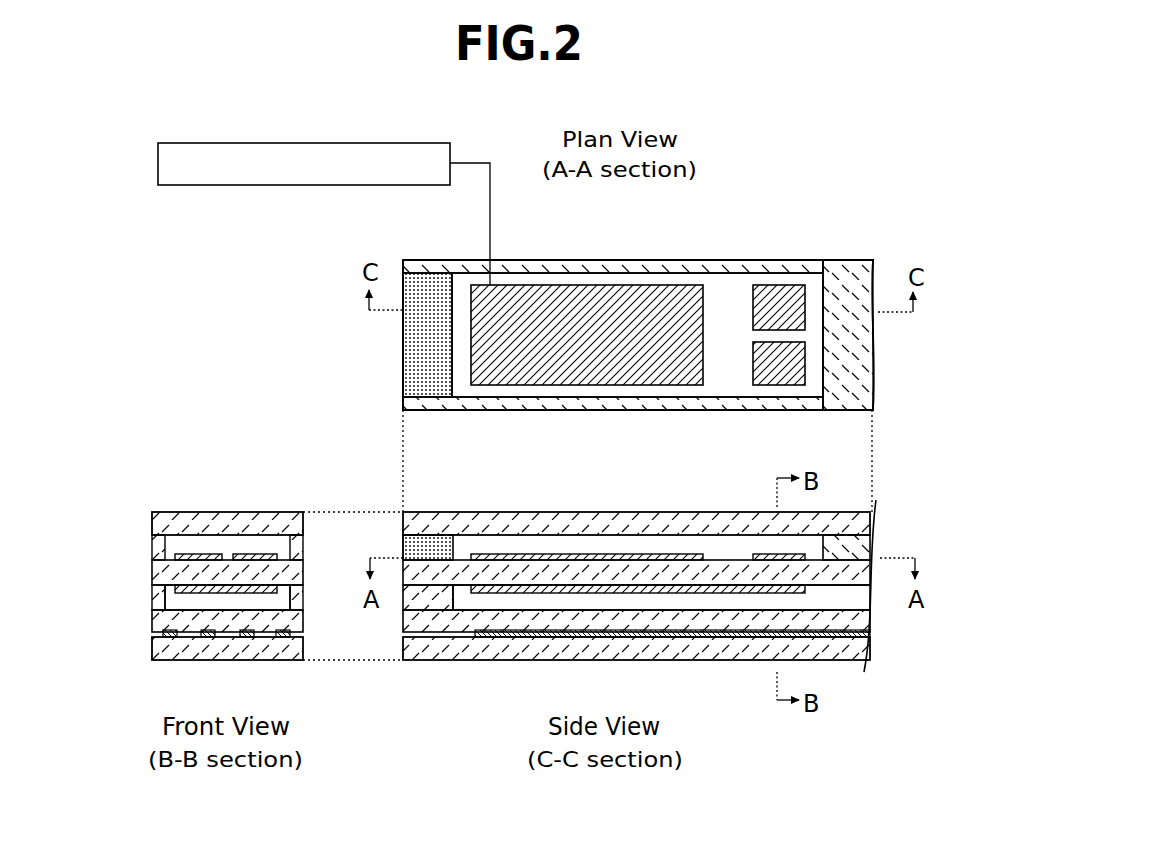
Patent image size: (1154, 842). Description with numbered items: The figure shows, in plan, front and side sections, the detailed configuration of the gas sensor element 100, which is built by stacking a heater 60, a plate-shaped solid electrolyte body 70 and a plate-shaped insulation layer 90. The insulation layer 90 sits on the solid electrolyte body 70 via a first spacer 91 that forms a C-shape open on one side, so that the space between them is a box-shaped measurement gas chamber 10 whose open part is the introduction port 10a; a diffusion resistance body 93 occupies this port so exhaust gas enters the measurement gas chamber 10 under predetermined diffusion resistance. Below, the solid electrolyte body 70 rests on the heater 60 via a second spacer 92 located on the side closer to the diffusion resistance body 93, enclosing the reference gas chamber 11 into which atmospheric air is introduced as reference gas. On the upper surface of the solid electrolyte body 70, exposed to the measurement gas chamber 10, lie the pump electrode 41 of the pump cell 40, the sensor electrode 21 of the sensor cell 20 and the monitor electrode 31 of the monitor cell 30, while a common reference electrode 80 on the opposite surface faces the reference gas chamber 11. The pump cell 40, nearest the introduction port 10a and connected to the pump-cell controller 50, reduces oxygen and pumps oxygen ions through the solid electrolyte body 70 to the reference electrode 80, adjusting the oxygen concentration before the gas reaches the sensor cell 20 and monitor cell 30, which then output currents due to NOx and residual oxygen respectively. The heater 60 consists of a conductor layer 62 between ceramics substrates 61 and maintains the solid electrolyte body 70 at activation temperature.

The measurement gas chamber 10 is at (728, 287).
The introduction port 10a is at (365, 553).
The reference gas chamber 11 is at (467, 600).
The sensor cell 20 is at (812, 323).
The sensor electrode 21 is at (775, 296).
The monitor cell 30 is at (748, 365).
The monitor electrode 31 is at (780, 377).
The pump cell 40 is at (615, 463).
The pump electrode 41 is at (520, 300).
The pump-cell controller 50 is at (394, 143).
The heater 60 is at (399, 637).
The ceramics substrate 61 is at (867, 623).
The conductor layer 62 is at (858, 650).
The solid electrolyte body 70 is at (575, 585).
The reference electrode 80 is at (613, 588).
The insulation layer 90 is at (860, 525).
The first spacer 91 is at (850, 283).
The second spacer 92 is at (433, 600).
The diffusion resistance body 93 is at (423, 290).
The gas sensor element 100 is at (294, 294).